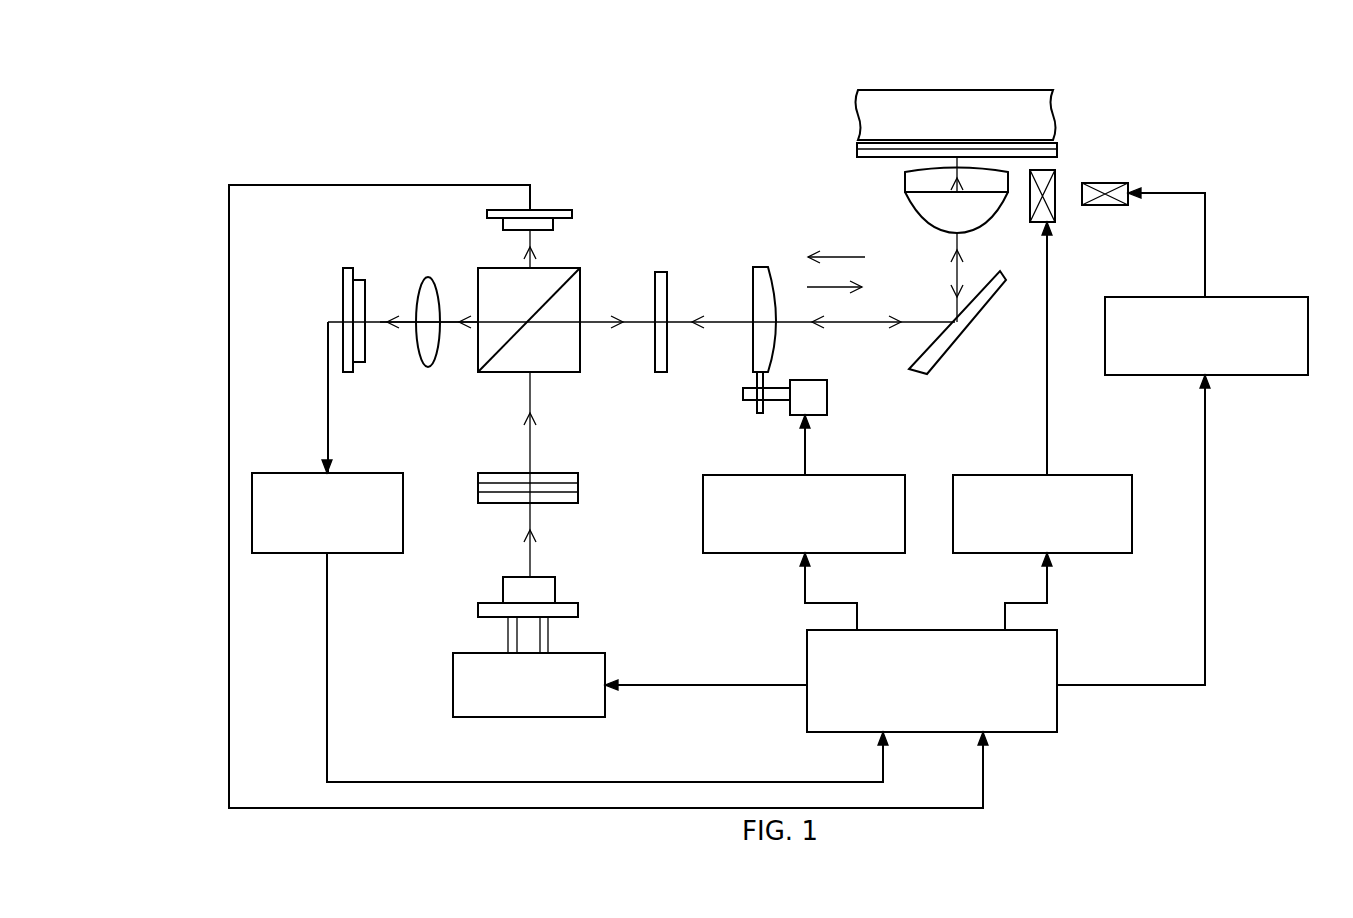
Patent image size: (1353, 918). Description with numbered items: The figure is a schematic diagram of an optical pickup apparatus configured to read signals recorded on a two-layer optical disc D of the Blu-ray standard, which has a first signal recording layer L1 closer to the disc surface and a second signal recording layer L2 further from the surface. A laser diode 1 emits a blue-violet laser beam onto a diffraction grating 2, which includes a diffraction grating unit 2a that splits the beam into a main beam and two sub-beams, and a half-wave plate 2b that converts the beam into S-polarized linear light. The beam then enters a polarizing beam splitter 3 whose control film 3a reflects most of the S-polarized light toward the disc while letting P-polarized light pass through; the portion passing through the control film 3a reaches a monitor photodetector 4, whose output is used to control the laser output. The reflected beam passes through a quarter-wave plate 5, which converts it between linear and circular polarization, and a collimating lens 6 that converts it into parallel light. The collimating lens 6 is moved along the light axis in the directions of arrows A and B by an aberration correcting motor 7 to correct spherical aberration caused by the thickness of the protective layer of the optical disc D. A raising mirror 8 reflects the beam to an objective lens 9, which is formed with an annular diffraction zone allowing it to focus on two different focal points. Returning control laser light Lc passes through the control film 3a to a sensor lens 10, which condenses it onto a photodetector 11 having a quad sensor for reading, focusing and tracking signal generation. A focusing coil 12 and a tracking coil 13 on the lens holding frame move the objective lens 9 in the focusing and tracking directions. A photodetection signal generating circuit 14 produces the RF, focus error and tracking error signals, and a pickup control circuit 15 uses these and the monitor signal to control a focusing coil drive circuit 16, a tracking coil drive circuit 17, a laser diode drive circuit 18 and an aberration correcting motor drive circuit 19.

The laser diode 1 is at (547, 592).
The diffraction grating 2 is at (587, 492).
The diffraction grating unit 2a is at (478, 490).
The half-wave plate 2b is at (478, 475).
The polarizing beam splitter 3 is at (508, 367).
The control film 3a is at (563, 293).
The monitor photodetector 4 is at (557, 212).
The quarter-wave plate 5 is at (662, 367).
The collimating lens 6 is at (757, 267).
The aberration correcting motor 7 is at (818, 400).
The raising mirror 8 is at (950, 342).
The objective lens 9 is at (913, 183).
The sensor lens 10 is at (428, 282).
The photodetector 11 is at (347, 268).
The focusing coil 12 is at (1052, 197).
The tracking coil 13 is at (1105, 203).
The photodetection signal generating circuit 14 is at (275, 467).
The pickup control circuit 15 is at (1050, 707).
The focusing coil drive circuit 16 is at (1123, 467).
The tracking coil drive circuit 17 is at (1270, 367).
The laser diode drive circuit 18 is at (600, 707).
The aberration correcting motor drive circuit 19 is at (895, 467).
The optical disc D is at (1033, 98).
The first signal recording layer L1 is at (1057, 148).
The second signal recording layer L2 is at (1040, 140).
The control laser light Lc is at (450, 327).
The arrow A is at (826, 258).
The arrow B is at (846, 288).